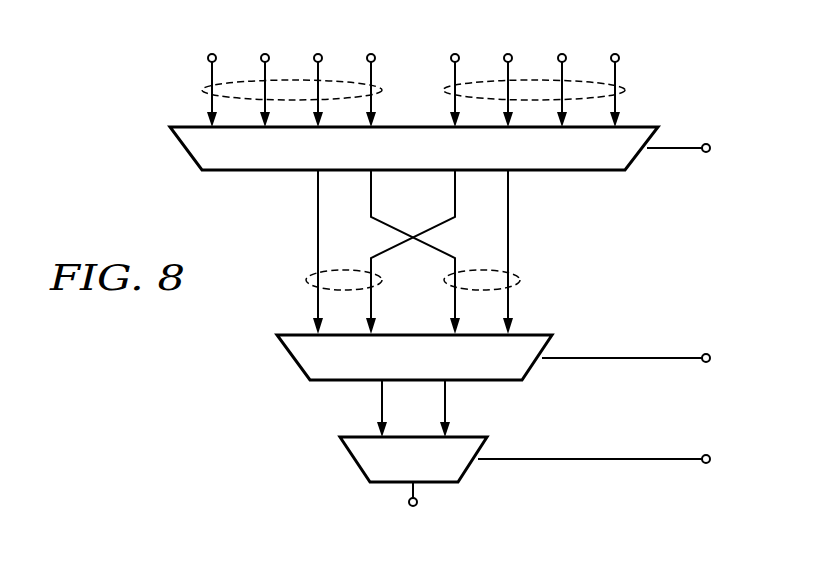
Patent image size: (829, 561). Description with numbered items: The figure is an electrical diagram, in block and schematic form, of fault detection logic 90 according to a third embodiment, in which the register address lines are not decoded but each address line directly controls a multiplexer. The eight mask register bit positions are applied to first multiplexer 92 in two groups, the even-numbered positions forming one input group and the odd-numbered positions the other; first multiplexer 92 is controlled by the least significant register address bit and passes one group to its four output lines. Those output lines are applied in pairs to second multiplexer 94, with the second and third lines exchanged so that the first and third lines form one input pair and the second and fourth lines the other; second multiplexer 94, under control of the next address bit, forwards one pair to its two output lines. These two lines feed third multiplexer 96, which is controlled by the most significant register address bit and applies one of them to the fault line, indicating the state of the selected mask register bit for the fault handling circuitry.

The fault detection logic 90 is at (188, 420).
The first multiplexer 92 is at (183, 148).
The second multiplexer 94 is at (292, 357).
The third multiplexer 96 is at (353, 460).